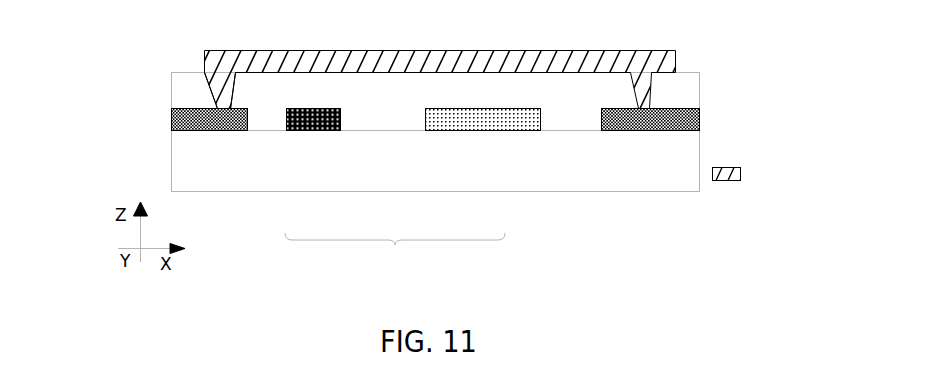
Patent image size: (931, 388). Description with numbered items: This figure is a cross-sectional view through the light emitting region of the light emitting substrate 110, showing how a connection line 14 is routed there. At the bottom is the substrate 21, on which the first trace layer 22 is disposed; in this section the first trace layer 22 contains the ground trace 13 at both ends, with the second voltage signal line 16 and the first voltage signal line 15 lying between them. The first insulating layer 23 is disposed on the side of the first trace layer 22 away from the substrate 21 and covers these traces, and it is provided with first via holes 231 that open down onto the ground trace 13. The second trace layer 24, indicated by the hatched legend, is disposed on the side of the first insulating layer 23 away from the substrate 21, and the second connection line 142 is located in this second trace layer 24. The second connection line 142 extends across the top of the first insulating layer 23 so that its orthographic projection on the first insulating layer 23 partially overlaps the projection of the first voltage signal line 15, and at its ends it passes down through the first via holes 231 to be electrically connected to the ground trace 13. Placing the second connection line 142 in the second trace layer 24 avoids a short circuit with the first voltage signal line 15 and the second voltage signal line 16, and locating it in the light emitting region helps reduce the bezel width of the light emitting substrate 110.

The light emitting substrate 110 is at (102, 16).
The second connection line 142 is at (472, 76).
The connection line 14 is at (632, 62).
The first via hole 231 is at (213, 86).
The first insulating layer 23 is at (178, 98).
The substrate 21 is at (180, 168).
The ground trace 13 is at (223, 130).
The second voltage signal line 16 is at (321, 130).
The first voltage signal line 15 is at (455, 118).
The first trace layer 22 is at (395, 252).
The second trace layer 24 is at (737, 174).